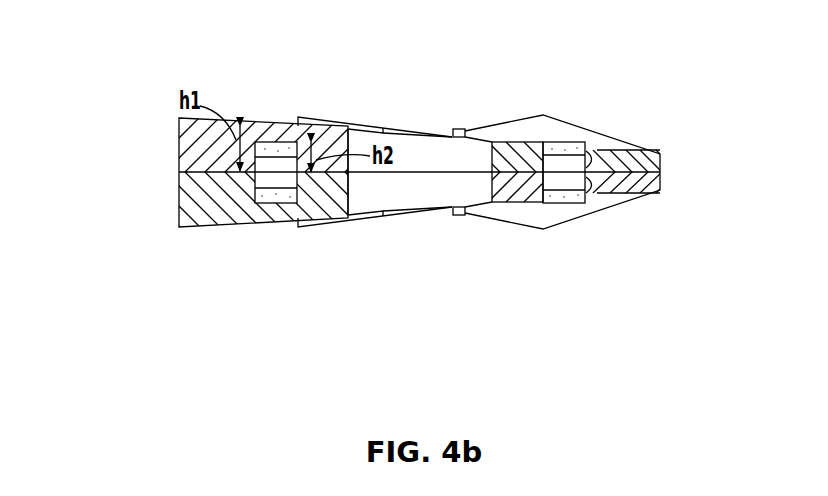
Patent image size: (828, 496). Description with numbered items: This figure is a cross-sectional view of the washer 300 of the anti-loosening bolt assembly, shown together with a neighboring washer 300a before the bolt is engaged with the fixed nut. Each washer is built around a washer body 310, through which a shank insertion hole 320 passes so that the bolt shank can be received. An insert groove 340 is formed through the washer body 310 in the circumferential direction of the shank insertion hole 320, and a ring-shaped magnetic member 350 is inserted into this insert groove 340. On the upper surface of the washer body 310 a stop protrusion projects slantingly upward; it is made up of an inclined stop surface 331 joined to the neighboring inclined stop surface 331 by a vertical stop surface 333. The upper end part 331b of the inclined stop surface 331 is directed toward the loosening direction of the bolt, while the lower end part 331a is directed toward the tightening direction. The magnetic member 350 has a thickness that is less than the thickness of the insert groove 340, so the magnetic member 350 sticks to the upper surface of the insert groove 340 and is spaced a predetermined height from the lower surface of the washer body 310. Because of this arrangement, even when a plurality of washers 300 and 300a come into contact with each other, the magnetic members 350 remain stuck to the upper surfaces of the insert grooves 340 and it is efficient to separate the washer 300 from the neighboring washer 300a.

The washer 300 is at (157, 97).
The neighboring washer 300a is at (157, 250).
The washer body 310 is at (179, 150).
The shank insertion hole 320 is at (408, 134).
The inclined stop surface 331 is at (362, 128).
The lower end part of the inclined stop surface 331a is at (455, 130).
The upper end part of the inclined stop surface 331b is at (298, 117).
The vertical stop surface 333 is at (463, 129).
The insert groove 340 is at (591, 150).
The magnetic member 350 is at (556, 142).